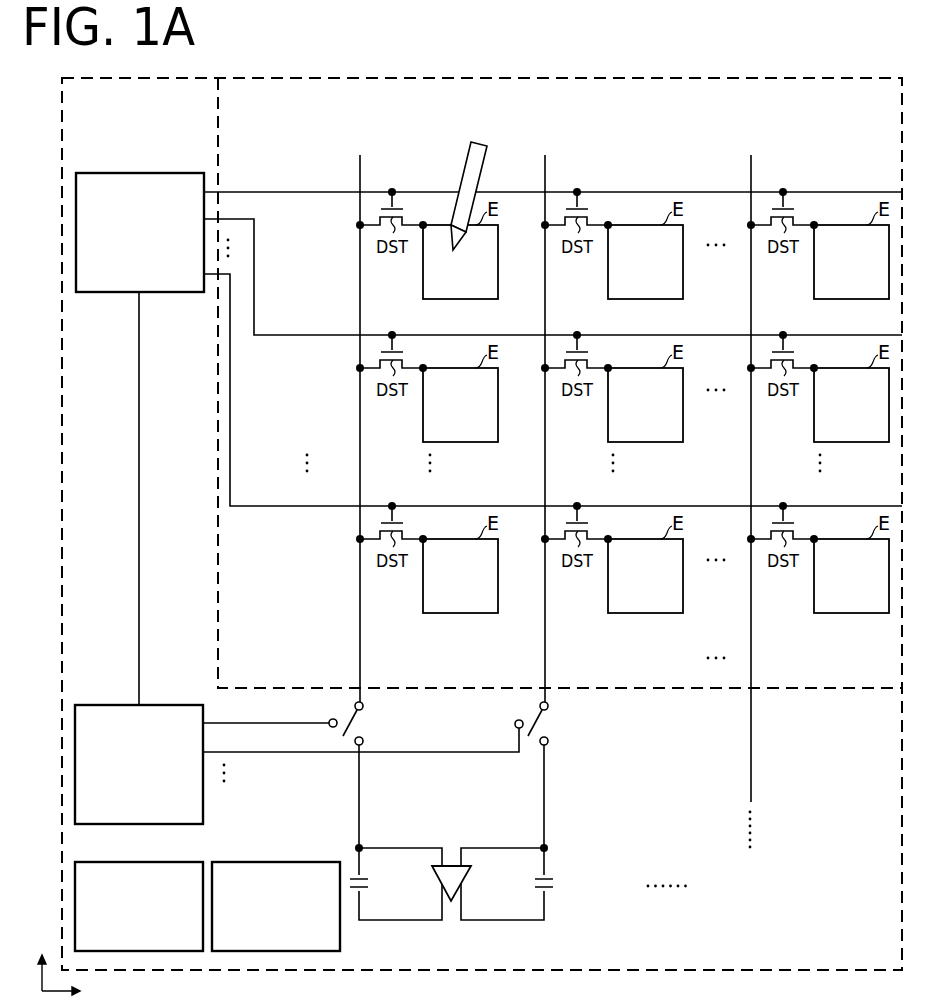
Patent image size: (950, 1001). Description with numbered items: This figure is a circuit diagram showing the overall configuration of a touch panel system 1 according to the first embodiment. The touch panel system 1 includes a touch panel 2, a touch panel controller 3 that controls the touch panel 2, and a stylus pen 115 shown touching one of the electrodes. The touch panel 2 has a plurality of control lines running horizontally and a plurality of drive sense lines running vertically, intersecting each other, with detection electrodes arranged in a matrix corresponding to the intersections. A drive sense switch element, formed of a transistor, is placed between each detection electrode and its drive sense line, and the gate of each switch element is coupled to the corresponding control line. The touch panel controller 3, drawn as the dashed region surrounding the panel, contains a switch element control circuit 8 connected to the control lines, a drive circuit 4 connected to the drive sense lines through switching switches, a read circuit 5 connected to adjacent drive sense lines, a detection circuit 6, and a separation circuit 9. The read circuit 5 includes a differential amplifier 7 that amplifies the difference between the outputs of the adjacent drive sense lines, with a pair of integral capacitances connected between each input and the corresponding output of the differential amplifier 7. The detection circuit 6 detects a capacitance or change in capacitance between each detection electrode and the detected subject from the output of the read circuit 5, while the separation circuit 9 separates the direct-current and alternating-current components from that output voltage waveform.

The touch panel system 1 is at (320, 52).
The touch panel 2 is at (322, 112).
The touch panel controller 3 is at (195, 78).
The drive circuit 4 is at (170, 705).
The read circuit 5 is at (404, 836).
The detection circuit 6 is at (170, 862).
The differential amplifier 7 is at (451, 903).
The switch element control circuit 8 is at (172, 173).
The separation circuit 9 is at (307, 862).
The stylus pen 115 is at (480, 142).